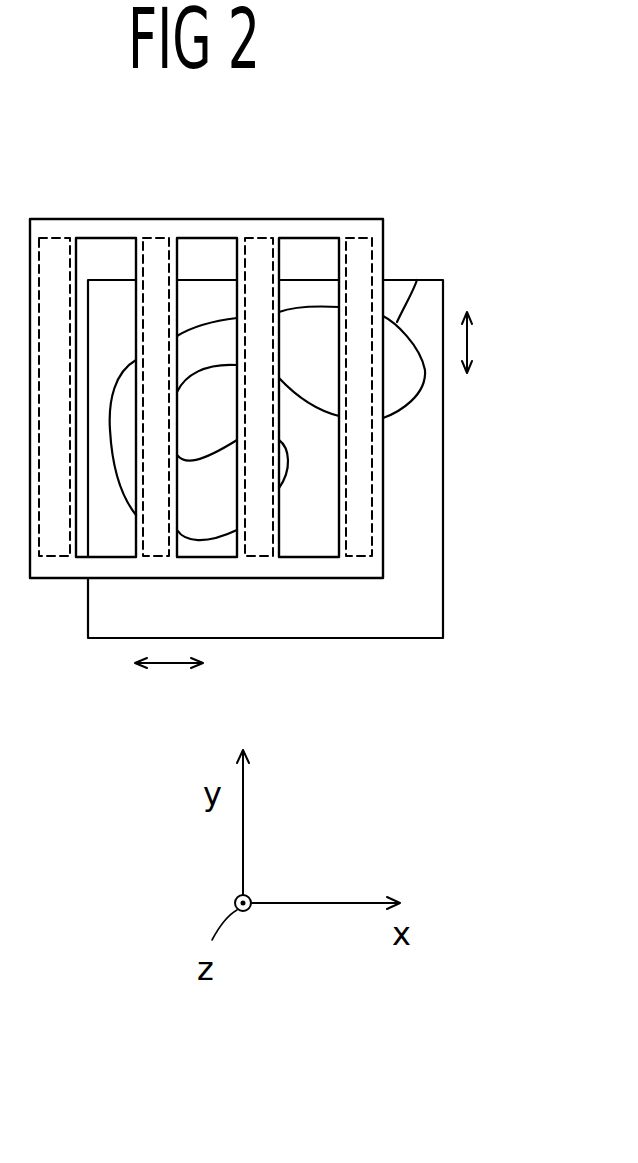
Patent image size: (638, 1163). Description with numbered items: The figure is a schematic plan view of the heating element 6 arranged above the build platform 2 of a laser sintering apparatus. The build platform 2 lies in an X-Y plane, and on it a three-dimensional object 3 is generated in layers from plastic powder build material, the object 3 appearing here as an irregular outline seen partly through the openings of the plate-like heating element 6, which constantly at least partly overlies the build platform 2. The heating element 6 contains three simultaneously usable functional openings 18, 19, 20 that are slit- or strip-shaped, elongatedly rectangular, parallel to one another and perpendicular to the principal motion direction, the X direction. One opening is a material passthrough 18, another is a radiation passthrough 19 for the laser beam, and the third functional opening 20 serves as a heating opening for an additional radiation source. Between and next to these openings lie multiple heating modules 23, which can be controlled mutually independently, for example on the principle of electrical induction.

The build platform 2 is at (395, 617).
The three-dimensional object 3 is at (402, 322).
The heating element 6 is at (315, 219).
The material passthrough 18 is at (206, 243).
The radiation passthrough 19 is at (96, 240).
The functional opening 20 is at (310, 543).
The heating modules 23 is at (52, 236).